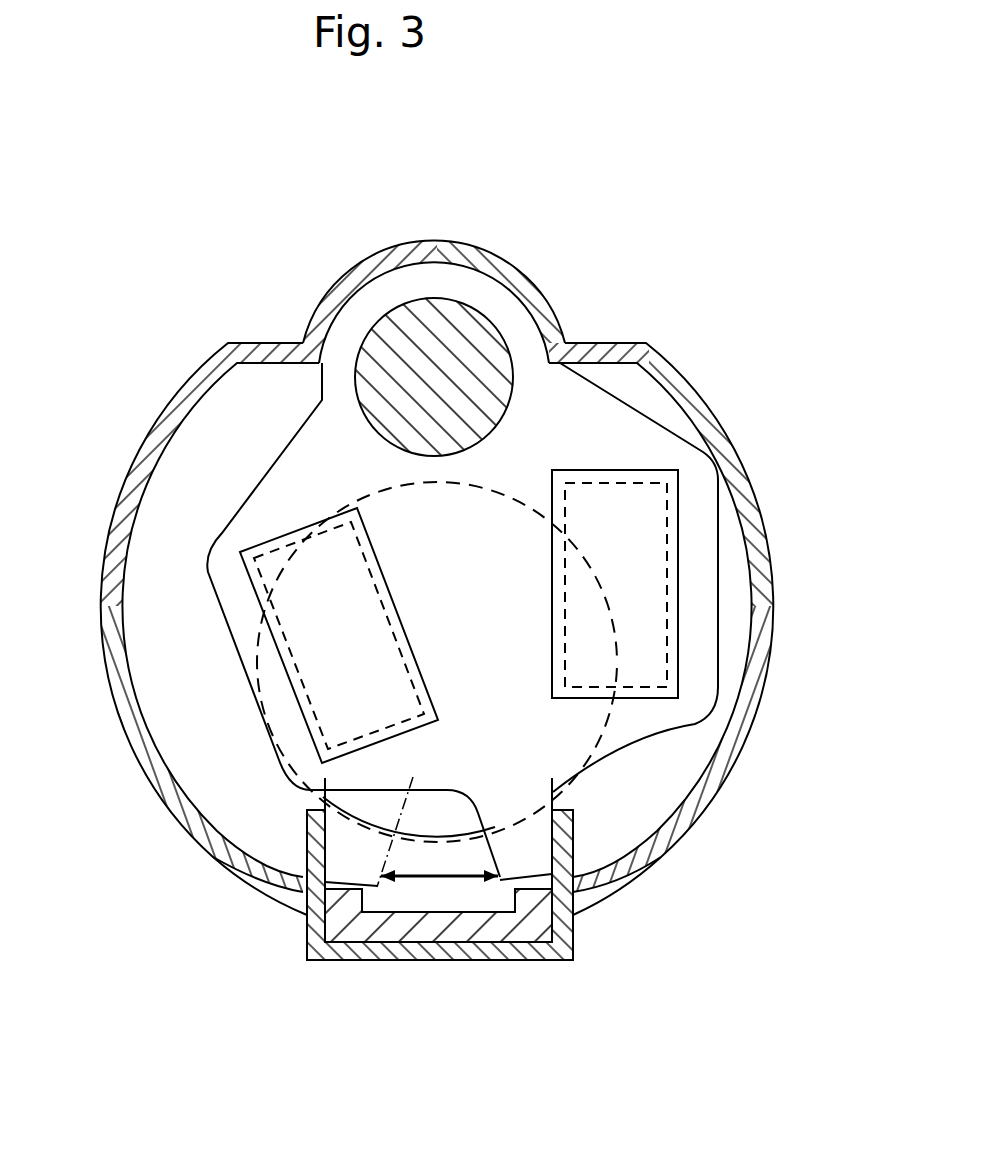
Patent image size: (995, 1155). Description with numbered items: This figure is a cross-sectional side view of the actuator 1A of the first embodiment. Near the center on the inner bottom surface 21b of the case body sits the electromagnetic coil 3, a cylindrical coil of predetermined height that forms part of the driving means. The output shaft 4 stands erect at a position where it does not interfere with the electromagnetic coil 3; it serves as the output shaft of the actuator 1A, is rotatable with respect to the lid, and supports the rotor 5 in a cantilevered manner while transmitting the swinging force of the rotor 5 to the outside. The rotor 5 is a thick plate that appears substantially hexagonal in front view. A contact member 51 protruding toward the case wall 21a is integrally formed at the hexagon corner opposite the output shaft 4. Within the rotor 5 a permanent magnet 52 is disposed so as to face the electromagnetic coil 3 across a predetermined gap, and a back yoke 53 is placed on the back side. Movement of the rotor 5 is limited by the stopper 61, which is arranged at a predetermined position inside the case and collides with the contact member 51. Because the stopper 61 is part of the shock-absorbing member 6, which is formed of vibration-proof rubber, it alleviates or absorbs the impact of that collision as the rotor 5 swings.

The actuator 1A is at (272, 128).
The electromagnetic coil 3 is at (280, 747).
The output shaft 4 is at (470, 375).
The rotor 5 is at (319, 448).
The shock-absorbing member 6 is at (423, 958).
The case wall 21a is at (128, 494).
The inner bottom surface 21b is at (655, 764).
The contact member 51 is at (515, 833).
The permanent magnet 52 is at (641, 480).
The back yoke 53 is at (680, 647).
The stopper 61 is at (564, 833).